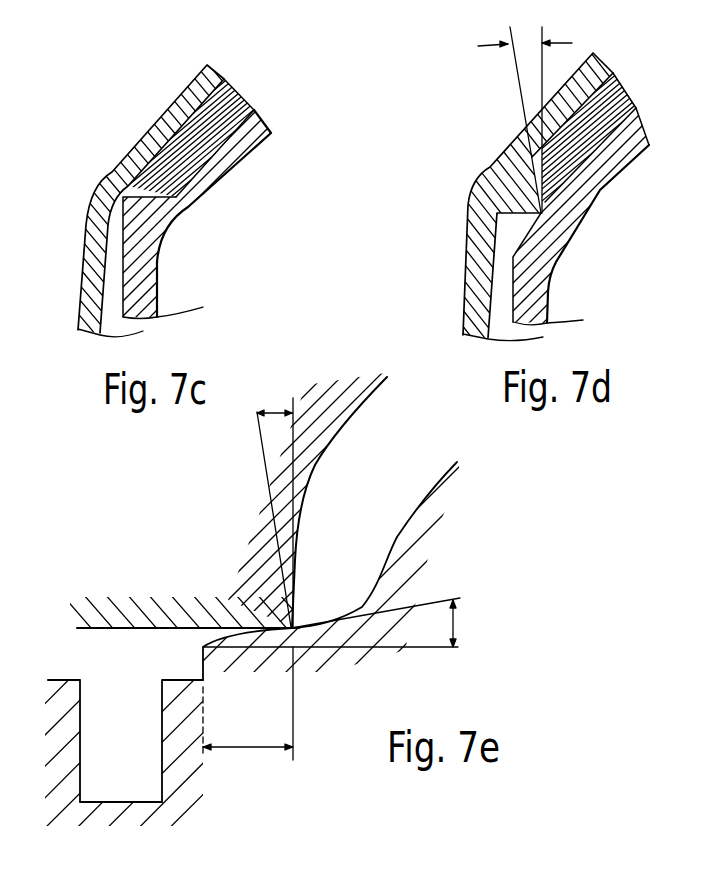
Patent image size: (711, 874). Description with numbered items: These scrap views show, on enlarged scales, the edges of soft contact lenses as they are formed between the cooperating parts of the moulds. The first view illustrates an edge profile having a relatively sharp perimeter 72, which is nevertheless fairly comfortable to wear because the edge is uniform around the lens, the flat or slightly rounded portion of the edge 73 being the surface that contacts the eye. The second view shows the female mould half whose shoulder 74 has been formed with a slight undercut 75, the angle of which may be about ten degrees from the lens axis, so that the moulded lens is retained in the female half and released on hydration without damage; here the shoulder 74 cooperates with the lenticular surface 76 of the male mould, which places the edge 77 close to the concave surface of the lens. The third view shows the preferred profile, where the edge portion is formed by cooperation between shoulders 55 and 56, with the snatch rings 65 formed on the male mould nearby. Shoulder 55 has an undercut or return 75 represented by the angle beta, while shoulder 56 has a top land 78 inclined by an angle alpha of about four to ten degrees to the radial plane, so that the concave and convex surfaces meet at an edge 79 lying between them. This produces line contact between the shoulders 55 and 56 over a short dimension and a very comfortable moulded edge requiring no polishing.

In FIG. 7c, the perimeter 72 is at (127, 197).
In FIG. 7c, the edge 73 is at (183, 203).
In FIG. 7d, the shoulder of the female mould half 74 is at (545, 205).
In FIG. 7d, the undercut 75 is at (530, 177).
In FIG. 7e, the undercut 75 is at (273, 590).
In FIG. 7d, the lenticular surface of the male mould 76 is at (545, 262).
In FIG. 7d, the edge 77 is at (550, 222).
In FIG. 7e, the top land 78 is at (257, 650).
In FIG. 7e, the edge 79 is at (302, 627).
In FIG. 7e, the snatch rings 65 is at (80, 738).
In FIG. 7e, the shoulder 55 is at (248, 797).
In FIG. 7e, the shoulder 56 is at (153, 537).